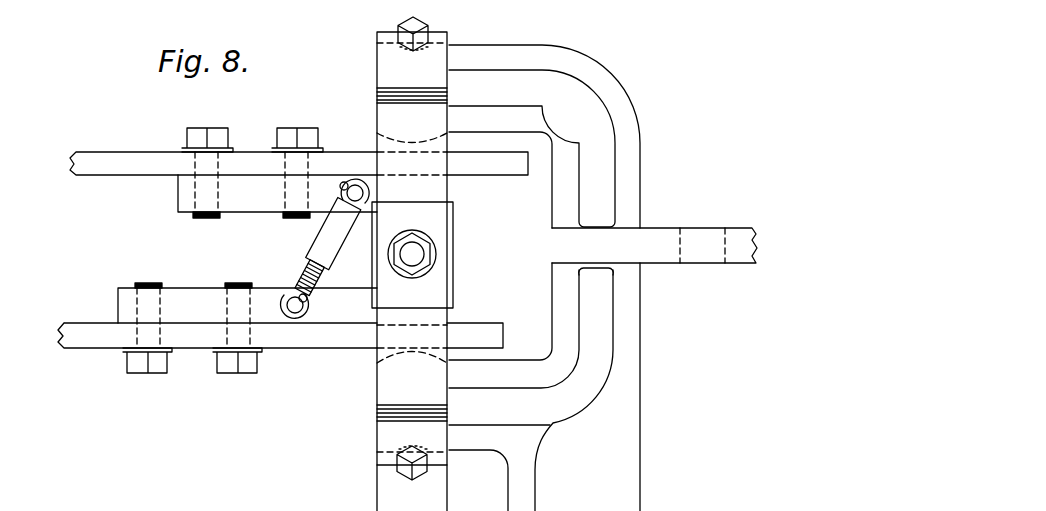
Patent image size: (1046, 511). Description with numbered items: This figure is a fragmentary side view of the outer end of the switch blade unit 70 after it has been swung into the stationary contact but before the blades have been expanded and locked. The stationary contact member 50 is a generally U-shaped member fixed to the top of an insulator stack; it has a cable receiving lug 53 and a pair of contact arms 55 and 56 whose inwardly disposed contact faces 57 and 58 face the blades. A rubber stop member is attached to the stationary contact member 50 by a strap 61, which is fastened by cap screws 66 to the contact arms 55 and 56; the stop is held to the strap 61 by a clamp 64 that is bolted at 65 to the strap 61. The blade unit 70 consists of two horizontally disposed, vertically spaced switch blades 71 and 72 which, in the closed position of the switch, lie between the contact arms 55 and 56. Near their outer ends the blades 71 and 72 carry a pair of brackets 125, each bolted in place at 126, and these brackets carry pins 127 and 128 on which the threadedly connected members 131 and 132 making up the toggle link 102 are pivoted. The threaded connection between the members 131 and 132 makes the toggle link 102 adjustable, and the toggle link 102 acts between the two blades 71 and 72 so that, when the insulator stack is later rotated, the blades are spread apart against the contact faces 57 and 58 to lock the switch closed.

The stationary contact member 50 is at (654, 391).
The cable receiving lug 53 is at (728, 228).
The contact arm 55 is at (527, 46).
The contact arm 56 is at (474, 408).
The contact face 57 is at (380, 141).
The contact face 58 is at (448, 330).
The strap 61 is at (440, 187).
The clamp 64 is at (440, 222).
The bolt 65 is at (425, 257).
The cap screw 66 is at (398, 34).
The blade unit 70 is at (276, 133).
The upper switch blade 71 is at (72, 160).
The switch blade 72 is at (86, 348).
The toggle link 102 is at (313, 281).
The bracket 125 is at (180, 198).
The bolt 126 is at (205, 127).
The pin 127 is at (343, 196).
The pin 128 is at (296, 314).
The threadedly connected member 131 is at (340, 233).
The threadedly connected member 132 is at (317, 287).